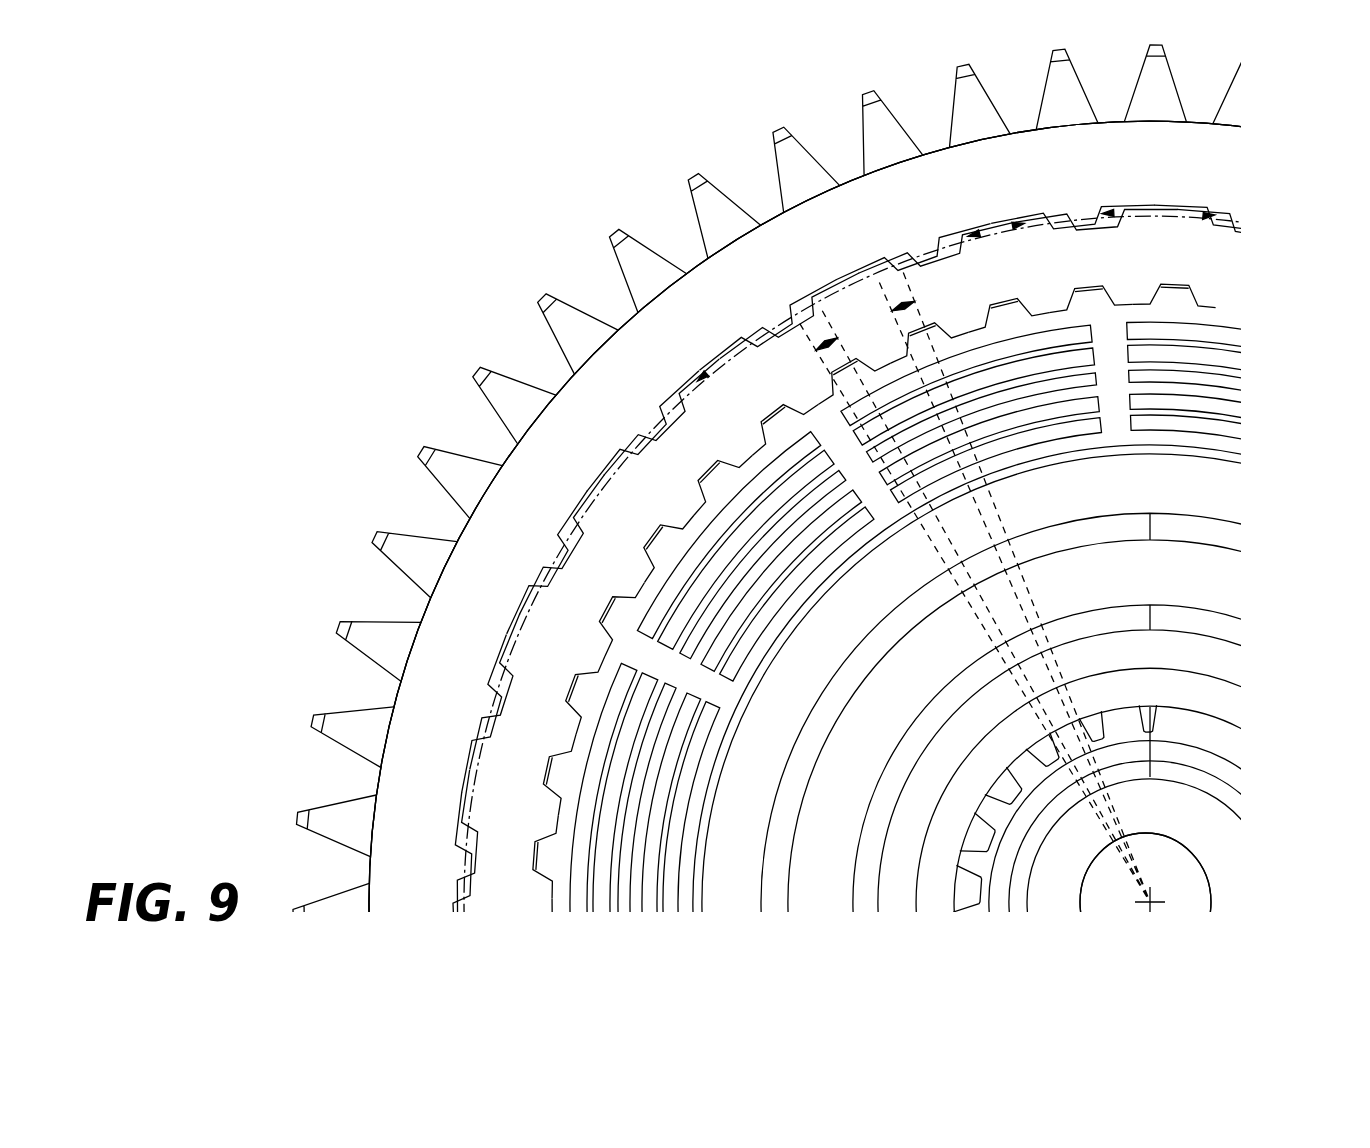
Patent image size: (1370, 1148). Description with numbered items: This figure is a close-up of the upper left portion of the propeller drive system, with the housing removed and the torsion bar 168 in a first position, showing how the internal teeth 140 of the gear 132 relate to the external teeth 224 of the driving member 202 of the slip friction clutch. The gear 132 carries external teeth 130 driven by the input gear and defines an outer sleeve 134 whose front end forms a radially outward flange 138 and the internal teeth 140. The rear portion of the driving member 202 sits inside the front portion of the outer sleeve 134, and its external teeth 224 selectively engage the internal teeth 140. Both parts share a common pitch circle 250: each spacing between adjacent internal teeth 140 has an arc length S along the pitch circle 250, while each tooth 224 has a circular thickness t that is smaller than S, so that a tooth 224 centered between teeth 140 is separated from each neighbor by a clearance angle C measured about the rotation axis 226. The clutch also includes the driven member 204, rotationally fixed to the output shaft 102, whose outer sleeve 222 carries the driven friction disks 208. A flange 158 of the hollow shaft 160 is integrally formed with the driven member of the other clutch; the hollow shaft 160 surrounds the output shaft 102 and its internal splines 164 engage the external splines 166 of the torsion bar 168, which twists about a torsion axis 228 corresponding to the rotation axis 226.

The external teeth 130 is at (799, 162).
The gear 132 is at (855, 207).
The outer sleeve 134 is at (807, 281).
The flange 138 is at (940, 153).
The internal teeth 140 is at (1071, 213).
The external teeth 224 is at (700, 388).
The pitch circle 250 is at (655, 440).
The driven friction disks 208 is at (717, 567).
The driving member 202 is at (548, 658).
The driven member 204 is at (693, 632).
The outer sleeve 222 is at (836, 713).
The flange 158 is at (821, 836).
The hollow shaft 160 is at (904, 882).
The internal splines 164 is at (987, 790).
The external splines 166 is at (1165, 713).
The torsion bar 168 is at (1195, 812).
The output shaft 102 is at (957, 812).
The rotation axis 226 is at (1152, 900).
The torsion axis 228 is at (1218, 902).